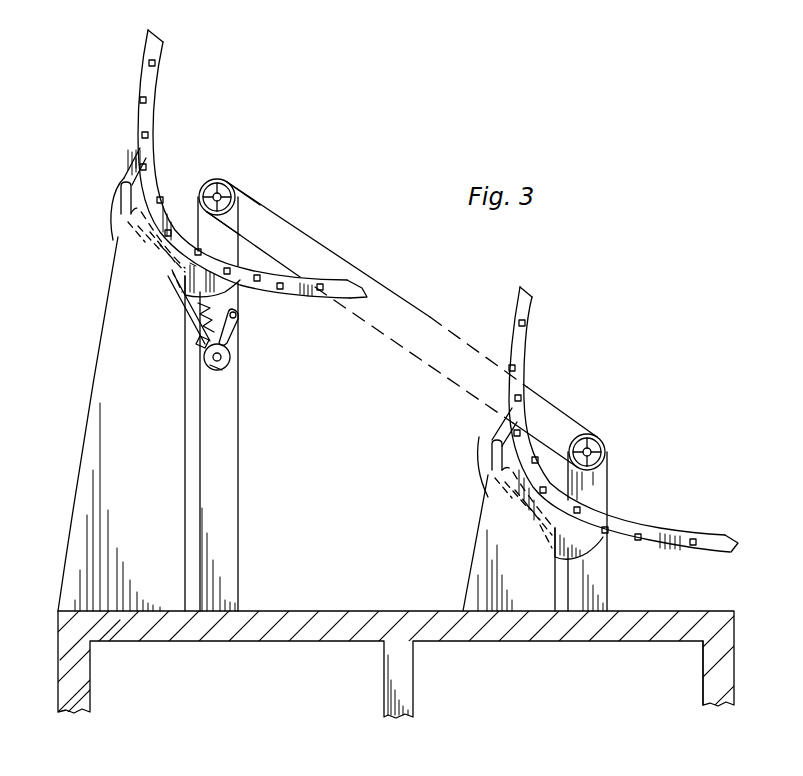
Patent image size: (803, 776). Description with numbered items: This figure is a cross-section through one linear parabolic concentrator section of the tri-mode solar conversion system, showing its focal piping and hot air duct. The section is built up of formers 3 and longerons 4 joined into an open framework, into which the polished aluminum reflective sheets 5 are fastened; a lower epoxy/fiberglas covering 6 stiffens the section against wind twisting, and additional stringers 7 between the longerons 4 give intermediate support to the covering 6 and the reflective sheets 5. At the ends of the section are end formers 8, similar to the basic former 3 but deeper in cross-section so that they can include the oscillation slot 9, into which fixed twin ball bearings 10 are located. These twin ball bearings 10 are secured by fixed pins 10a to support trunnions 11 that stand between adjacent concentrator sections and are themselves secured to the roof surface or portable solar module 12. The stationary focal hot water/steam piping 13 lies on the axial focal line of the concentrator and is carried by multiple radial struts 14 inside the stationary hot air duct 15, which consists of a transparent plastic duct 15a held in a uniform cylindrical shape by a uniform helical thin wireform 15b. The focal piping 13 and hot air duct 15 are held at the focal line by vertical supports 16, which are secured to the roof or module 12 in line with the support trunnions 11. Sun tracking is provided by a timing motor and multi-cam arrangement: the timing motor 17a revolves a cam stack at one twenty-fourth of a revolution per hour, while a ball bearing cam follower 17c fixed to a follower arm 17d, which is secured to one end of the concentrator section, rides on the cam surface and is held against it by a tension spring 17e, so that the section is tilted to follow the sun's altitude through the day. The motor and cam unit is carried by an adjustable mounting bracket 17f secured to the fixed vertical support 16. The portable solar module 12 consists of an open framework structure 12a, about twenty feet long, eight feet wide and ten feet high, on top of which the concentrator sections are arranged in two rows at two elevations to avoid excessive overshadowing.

The former 3 is at (141, 76).
The longeron 4 is at (151, 33).
The polished aluminum reflective sheet 5 is at (333, 278).
The lower epoxy/fiberglas covering 6 is at (519, 311).
The stringer 7 is at (530, 313).
The end former 8 is at (486, 440).
The oscillation slot 9 is at (120, 189).
The twin ball bearings 10 is at (124, 246).
The fixed pin 10a is at (489, 492).
The support trunnion 11 is at (98, 455).
The portable solar module 12 is at (72, 657).
The open framework structure 12a is at (706, 680).
The stationary focal hot water/steam piping 13 is at (604, 461).
The radial strut 14 is at (217, 178).
The stationary hot air duct 15 is at (596, 438).
The transparent plastic duct 15a is at (258, 184).
The uniform helical thin wireform 15b is at (229, 215).
The vertical support 16 is at (227, 448).
The timing motor 17a is at (228, 369).
The ball bearing cam follower 17c is at (203, 344).
The follower arm 17d is at (180, 308).
The tension spring 17e is at (200, 337).
The adjustable mounting bracket 17f is at (236, 328).